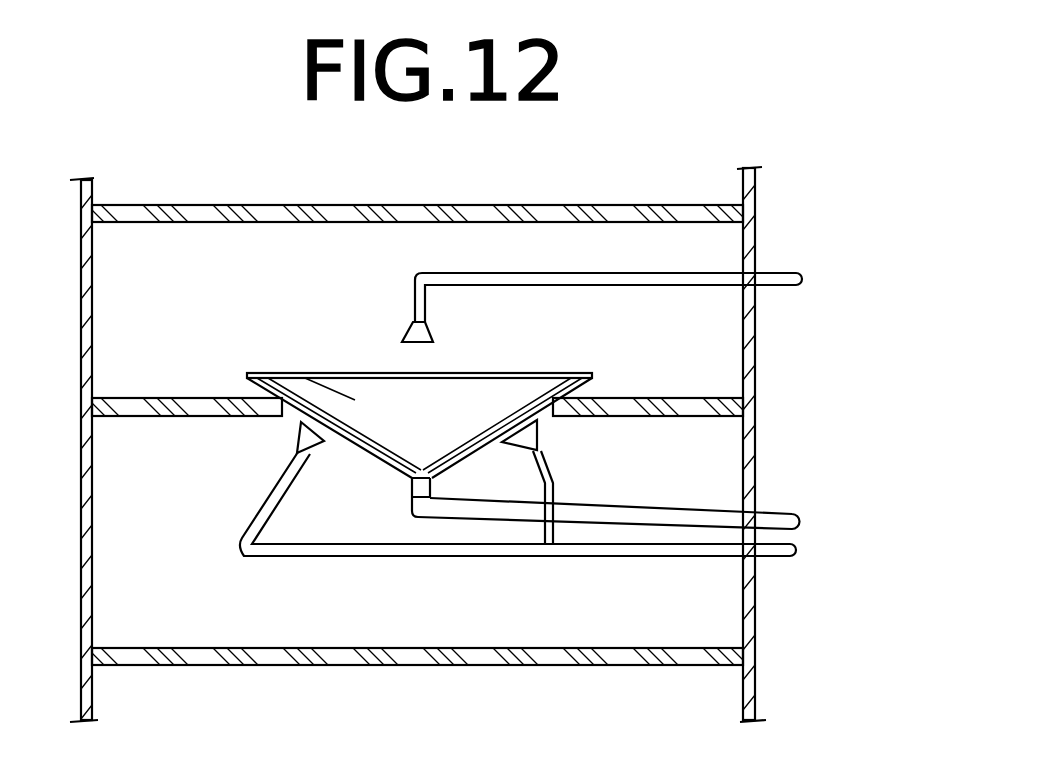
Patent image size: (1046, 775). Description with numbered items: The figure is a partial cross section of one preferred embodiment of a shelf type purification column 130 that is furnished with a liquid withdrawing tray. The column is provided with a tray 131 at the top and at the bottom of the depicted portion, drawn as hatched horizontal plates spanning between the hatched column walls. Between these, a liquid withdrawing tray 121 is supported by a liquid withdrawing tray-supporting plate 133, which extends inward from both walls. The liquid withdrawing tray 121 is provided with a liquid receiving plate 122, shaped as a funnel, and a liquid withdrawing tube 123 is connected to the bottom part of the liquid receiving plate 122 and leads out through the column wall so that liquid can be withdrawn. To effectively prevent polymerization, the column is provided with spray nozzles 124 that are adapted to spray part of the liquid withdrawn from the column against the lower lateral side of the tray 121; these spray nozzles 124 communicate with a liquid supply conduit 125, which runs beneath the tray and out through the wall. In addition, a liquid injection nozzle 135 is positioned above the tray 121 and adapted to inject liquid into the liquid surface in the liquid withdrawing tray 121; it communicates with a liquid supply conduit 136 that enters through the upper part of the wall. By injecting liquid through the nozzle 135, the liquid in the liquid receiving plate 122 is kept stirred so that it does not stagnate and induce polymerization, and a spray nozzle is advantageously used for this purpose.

The shelf type purification column 130 is at (787, 372).
The tray 131 is at (598, 205).
The liquid withdrawing tray-supporting plate 133 is at (720, 417).
The liquid supply conduit 136 is at (776, 273).
The liquid injection nozzle 135 is at (408, 332).
The liquid withdrawing tray 121 is at (469, 407).
The liquid receiving plate 122 is at (361, 448).
The liquid withdrawing tube 123 is at (768, 511).
The spray nozzles 124 is at (300, 440).
The liquid supply conduit 125 is at (768, 558).